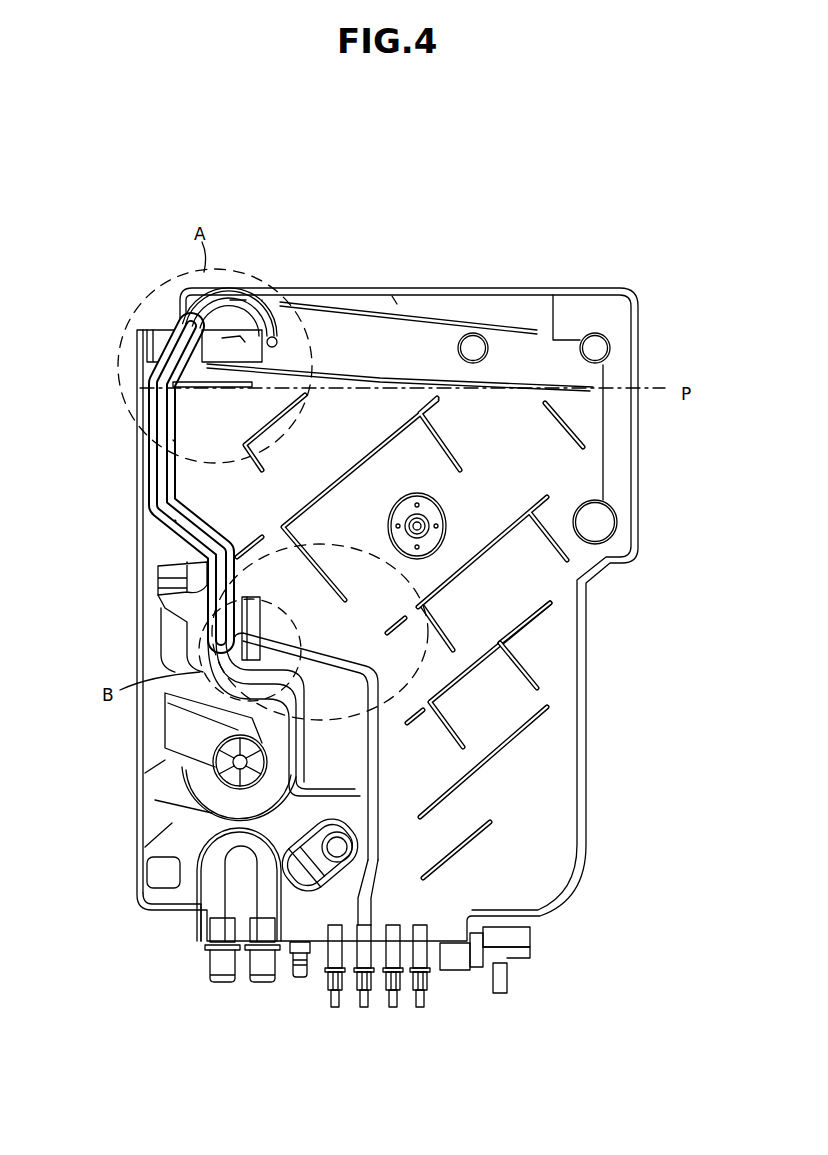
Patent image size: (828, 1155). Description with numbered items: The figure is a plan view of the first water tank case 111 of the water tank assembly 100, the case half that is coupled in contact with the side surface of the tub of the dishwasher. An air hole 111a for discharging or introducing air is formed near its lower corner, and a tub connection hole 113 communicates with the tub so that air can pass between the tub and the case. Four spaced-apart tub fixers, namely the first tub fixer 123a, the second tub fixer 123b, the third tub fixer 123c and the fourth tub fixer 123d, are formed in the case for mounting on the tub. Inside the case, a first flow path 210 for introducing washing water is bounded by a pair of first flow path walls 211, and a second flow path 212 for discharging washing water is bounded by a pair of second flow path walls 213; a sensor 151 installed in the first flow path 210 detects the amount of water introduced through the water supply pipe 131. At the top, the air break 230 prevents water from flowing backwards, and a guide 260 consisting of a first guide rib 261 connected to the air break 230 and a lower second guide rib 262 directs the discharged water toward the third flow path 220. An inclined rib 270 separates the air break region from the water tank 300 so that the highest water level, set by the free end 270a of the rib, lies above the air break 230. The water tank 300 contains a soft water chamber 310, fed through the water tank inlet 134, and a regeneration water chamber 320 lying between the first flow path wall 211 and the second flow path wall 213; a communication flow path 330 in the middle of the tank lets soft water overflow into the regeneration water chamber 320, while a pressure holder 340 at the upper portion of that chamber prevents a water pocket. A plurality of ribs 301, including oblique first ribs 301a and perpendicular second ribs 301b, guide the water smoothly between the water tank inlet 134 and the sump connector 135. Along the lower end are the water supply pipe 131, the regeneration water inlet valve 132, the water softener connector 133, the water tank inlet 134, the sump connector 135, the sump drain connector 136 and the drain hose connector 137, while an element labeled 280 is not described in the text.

The water tank assembly 100 is at (353, 223).
The first water tank case 111 is at (468, 289).
The air hole 111a is at (152, 870).
The tub connection hole 113 is at (168, 745).
The first tub fixer 123a is at (420, 526).
The second tub fixer 123b is at (478, 334).
The third tub fixer 123c is at (595, 333).
The fourth tub fixer 123d is at (600, 513).
The water supply pipe 131 is at (299, 985).
The regeneration water inlet valve 132 is at (335, 1008).
The water softener connector 133 is at (364, 1008).
The water tank inlet 134 is at (393, 1008).
The sump connector 135 is at (421, 1008).
The sump drain connector 136 is at (262, 985).
The drain hose connector 137 is at (212, 985).
The sensor 151 is at (313, 845).
The first flow path 210 is at (160, 413).
The first flow path wall 211 is at (263, 300).
The second flow path 212 is at (174, 440).
The second flow path wall 213 is at (198, 545).
The third flow path 220 is at (167, 347).
The air break 230 is at (238, 300).
The guide 260 is at (157, 311).
The first guide rib 261 is at (228, 298).
The second guide rib 262 is at (228, 330).
The inclined rib 270 is at (570, 390).
The free end 270a is at (598, 383).
The top rib 280 is at (390, 304).
The water tank 300 is at (320, 734).
The ribs 301 is at (606, 651).
The first rib 301a is at (530, 620).
The second rib 301b is at (527, 670).
The soft water chamber 310 is at (385, 625).
The regeneration water chamber 320 is at (358, 760).
The communication flow path 330 is at (250, 605).
The pressure holder 340 is at (214, 389).